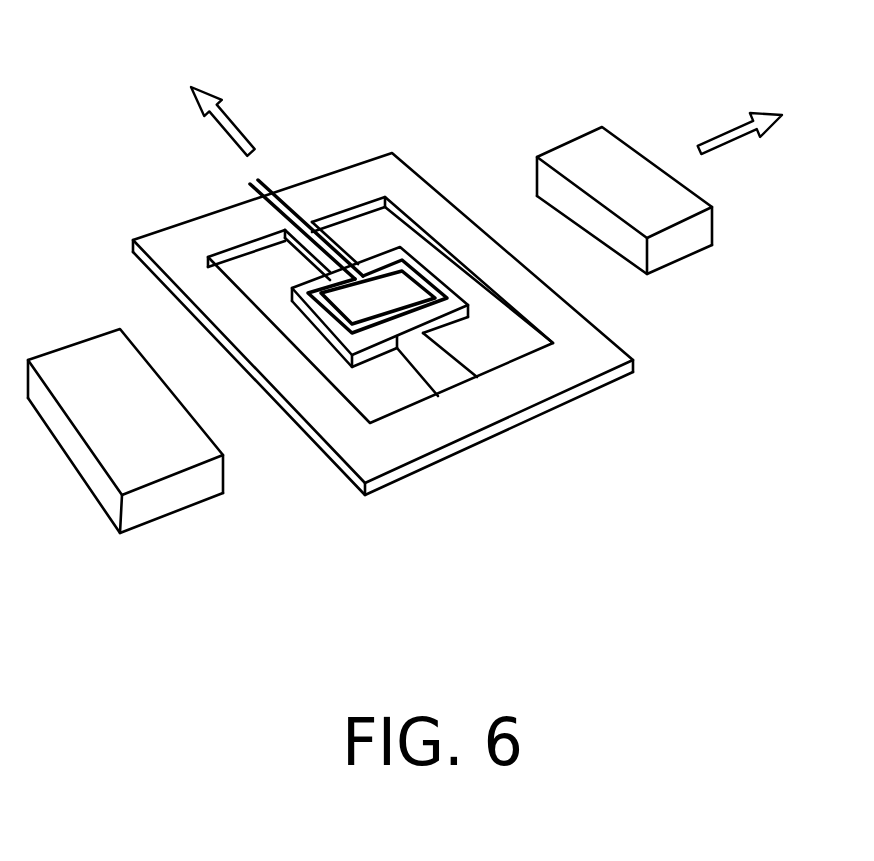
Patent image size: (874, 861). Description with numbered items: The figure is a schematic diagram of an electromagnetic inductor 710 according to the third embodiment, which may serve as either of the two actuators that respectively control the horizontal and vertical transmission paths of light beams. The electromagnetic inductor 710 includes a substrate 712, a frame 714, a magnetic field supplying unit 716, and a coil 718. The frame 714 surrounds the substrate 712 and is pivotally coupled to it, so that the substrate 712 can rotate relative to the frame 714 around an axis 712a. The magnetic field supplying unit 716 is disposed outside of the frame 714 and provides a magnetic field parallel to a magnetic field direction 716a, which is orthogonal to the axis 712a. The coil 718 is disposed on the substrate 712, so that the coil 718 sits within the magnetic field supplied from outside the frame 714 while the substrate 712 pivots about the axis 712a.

The electromagnetic inductor 710 is at (722, 505).
The substrate 712 is at (372, 350).
The axis 712a is at (235, 127).
The frame 714 is at (493, 395).
The magnetic field supplying unit 716 is at (175, 488).
The magnetic field direction 716a is at (728, 147).
The coil 718 is at (263, 183).